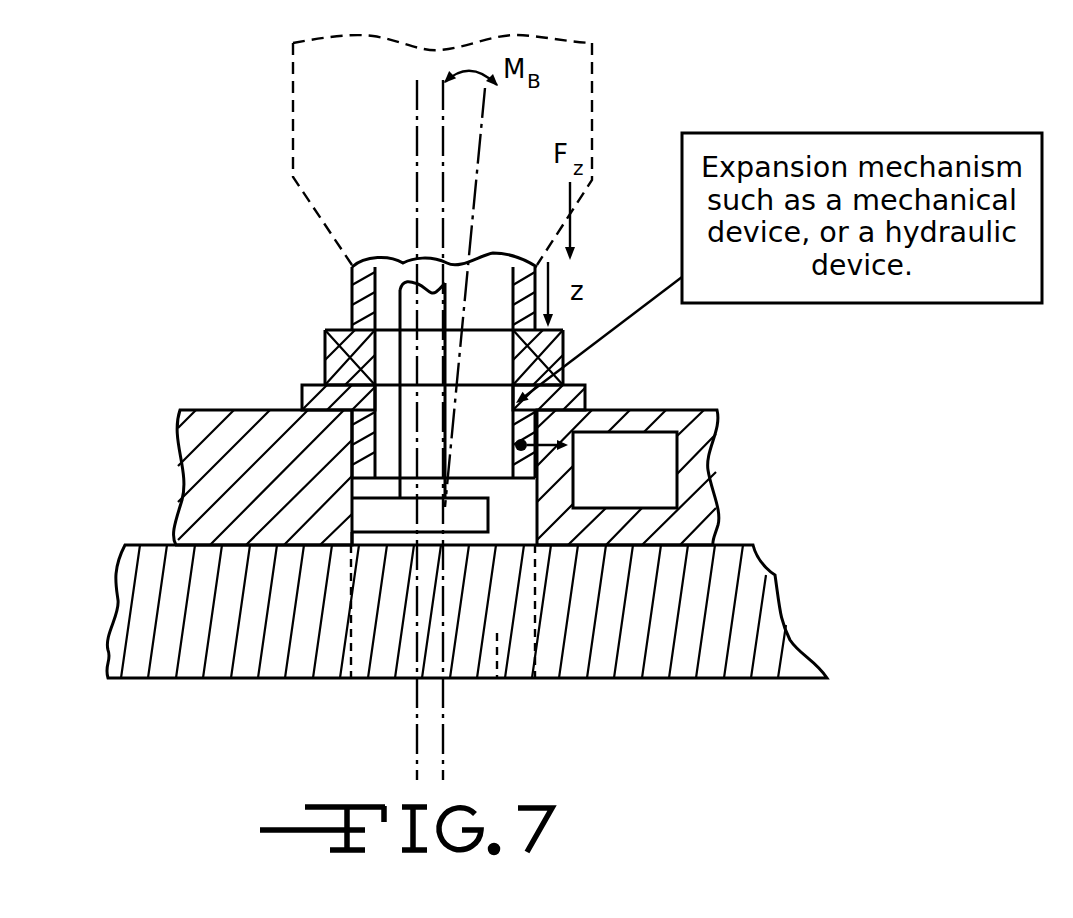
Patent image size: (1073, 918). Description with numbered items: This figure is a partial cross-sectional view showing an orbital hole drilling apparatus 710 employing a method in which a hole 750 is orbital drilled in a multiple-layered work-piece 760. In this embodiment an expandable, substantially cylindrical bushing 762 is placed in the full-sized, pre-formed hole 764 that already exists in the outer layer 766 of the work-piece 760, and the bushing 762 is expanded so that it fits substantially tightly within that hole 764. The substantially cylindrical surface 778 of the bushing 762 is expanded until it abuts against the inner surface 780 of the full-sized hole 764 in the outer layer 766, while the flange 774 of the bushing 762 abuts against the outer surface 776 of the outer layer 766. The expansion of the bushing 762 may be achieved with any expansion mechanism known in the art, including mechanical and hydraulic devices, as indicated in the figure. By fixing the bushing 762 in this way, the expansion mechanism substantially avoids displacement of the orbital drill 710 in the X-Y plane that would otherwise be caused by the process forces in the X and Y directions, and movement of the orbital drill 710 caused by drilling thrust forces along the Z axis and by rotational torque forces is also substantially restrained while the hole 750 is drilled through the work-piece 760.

The orbital hole drilling apparatus 710 is at (557, 105).
The hole 750 is at (497, 678).
The multiple-layered work-piece 760 is at (845, 572).
The bushing 762 is at (327, 382).
The full-sized hole 764 is at (530, 530).
The outer layer 766 is at (677, 435).
The flange 774 is at (303, 385).
The outer surface 776 is at (317, 403).
The substantially cylindrical surface 778 is at (350, 478).
The inner surface 780 is at (340, 442).